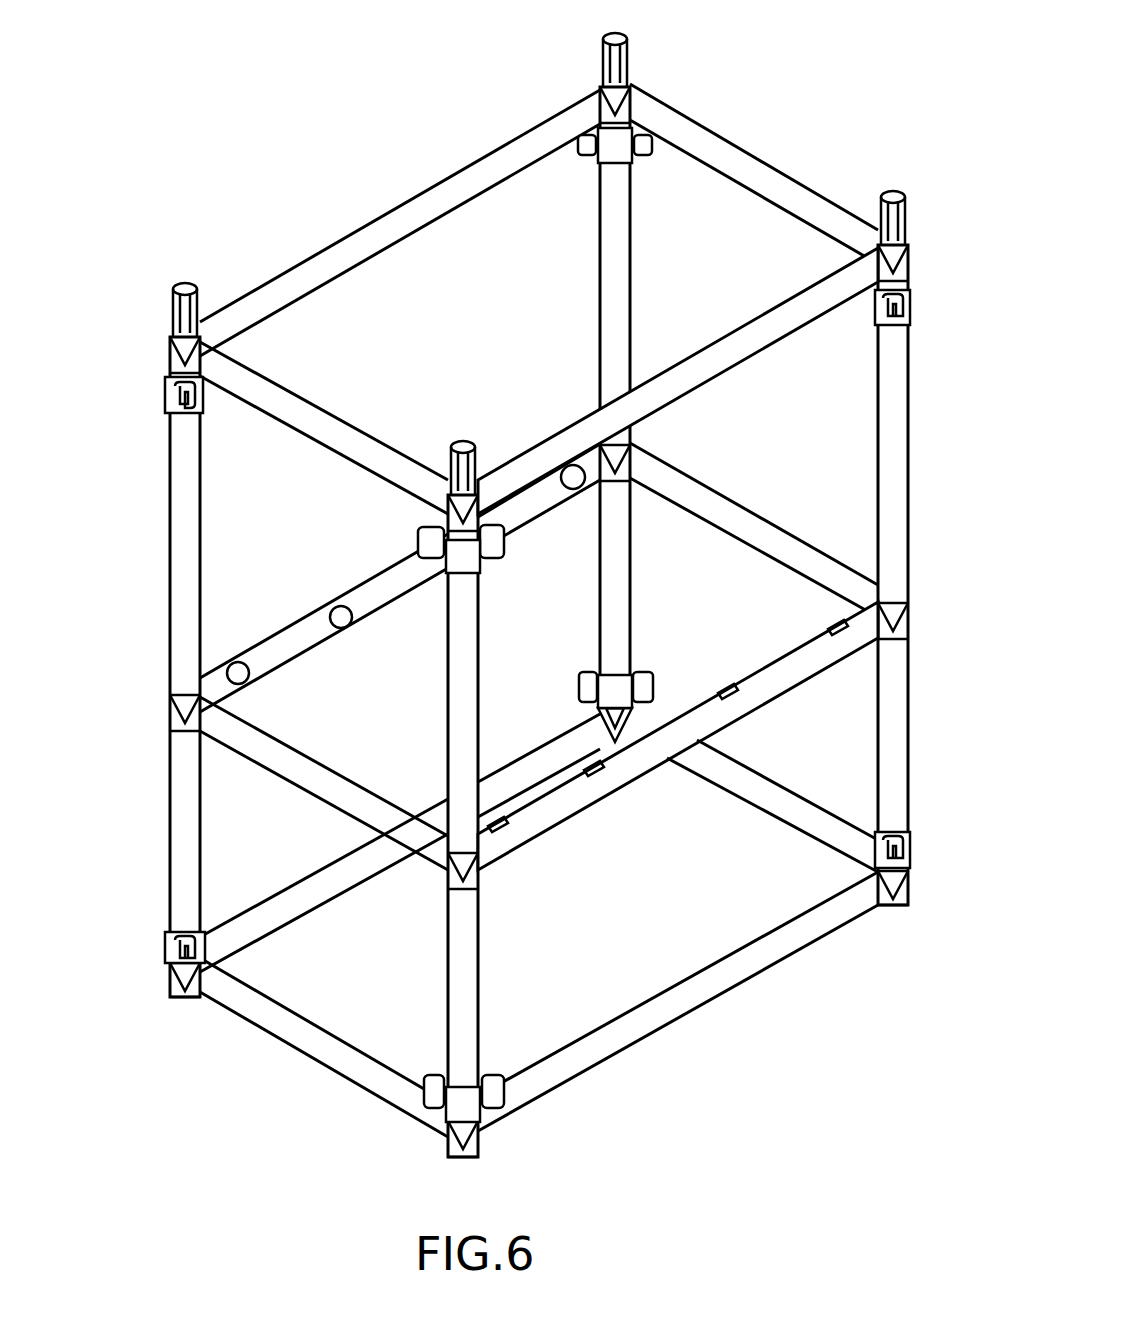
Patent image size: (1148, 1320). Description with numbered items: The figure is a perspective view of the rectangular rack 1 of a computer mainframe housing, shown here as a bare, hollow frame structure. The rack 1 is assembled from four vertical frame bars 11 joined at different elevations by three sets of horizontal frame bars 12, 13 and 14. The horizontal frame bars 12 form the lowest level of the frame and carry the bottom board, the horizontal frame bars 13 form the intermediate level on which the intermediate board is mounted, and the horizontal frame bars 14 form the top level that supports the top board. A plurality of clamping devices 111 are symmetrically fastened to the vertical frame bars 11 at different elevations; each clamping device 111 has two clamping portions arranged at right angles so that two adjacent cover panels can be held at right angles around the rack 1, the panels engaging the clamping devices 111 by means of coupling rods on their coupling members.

The rectangular rack 1 is at (648, 76).
The vertical frame bars 11 is at (606, 276).
The horizontal frame bars 12 is at (788, 793).
The horizontal frame bars 13 is at (758, 522).
The horizontal frame bars 14 is at (722, 165).
The clamping devices 111 is at (611, 148).